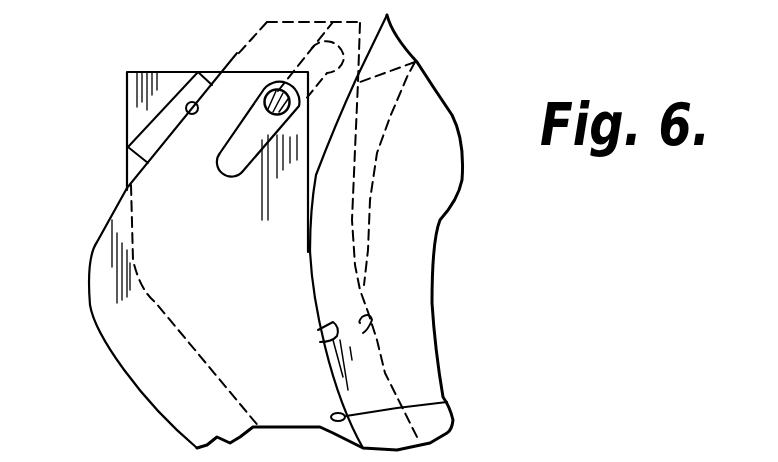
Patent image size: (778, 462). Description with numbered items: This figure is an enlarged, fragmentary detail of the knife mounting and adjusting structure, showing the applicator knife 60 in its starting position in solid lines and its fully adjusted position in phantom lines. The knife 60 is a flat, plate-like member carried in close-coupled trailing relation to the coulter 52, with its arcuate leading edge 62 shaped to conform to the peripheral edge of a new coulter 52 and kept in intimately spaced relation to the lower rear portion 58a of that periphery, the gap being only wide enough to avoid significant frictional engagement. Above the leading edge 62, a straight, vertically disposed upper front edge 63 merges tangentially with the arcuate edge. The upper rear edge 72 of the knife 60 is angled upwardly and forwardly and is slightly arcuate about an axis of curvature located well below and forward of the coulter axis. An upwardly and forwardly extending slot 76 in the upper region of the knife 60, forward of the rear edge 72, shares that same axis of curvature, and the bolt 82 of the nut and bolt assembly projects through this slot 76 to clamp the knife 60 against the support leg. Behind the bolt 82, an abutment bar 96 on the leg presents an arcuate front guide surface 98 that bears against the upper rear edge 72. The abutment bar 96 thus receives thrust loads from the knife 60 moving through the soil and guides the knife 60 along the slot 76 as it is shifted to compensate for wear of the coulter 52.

The coulter 52 is at (447, 110).
The lower rear portion of the peripheral edge 58a is at (372, 336).
The applicator knife 60 is at (158, 301).
The arcuate leading edge 62 is at (322, 337).
The upper front edge 63 is at (415, 63).
The upper rear edge 72 is at (257, 40).
The slot 76 is at (227, 128).
The bolt 82 is at (226, 169).
The abutment bar 96 is at (150, 121).
The arcuate front guide surface 98 is at (190, 102).